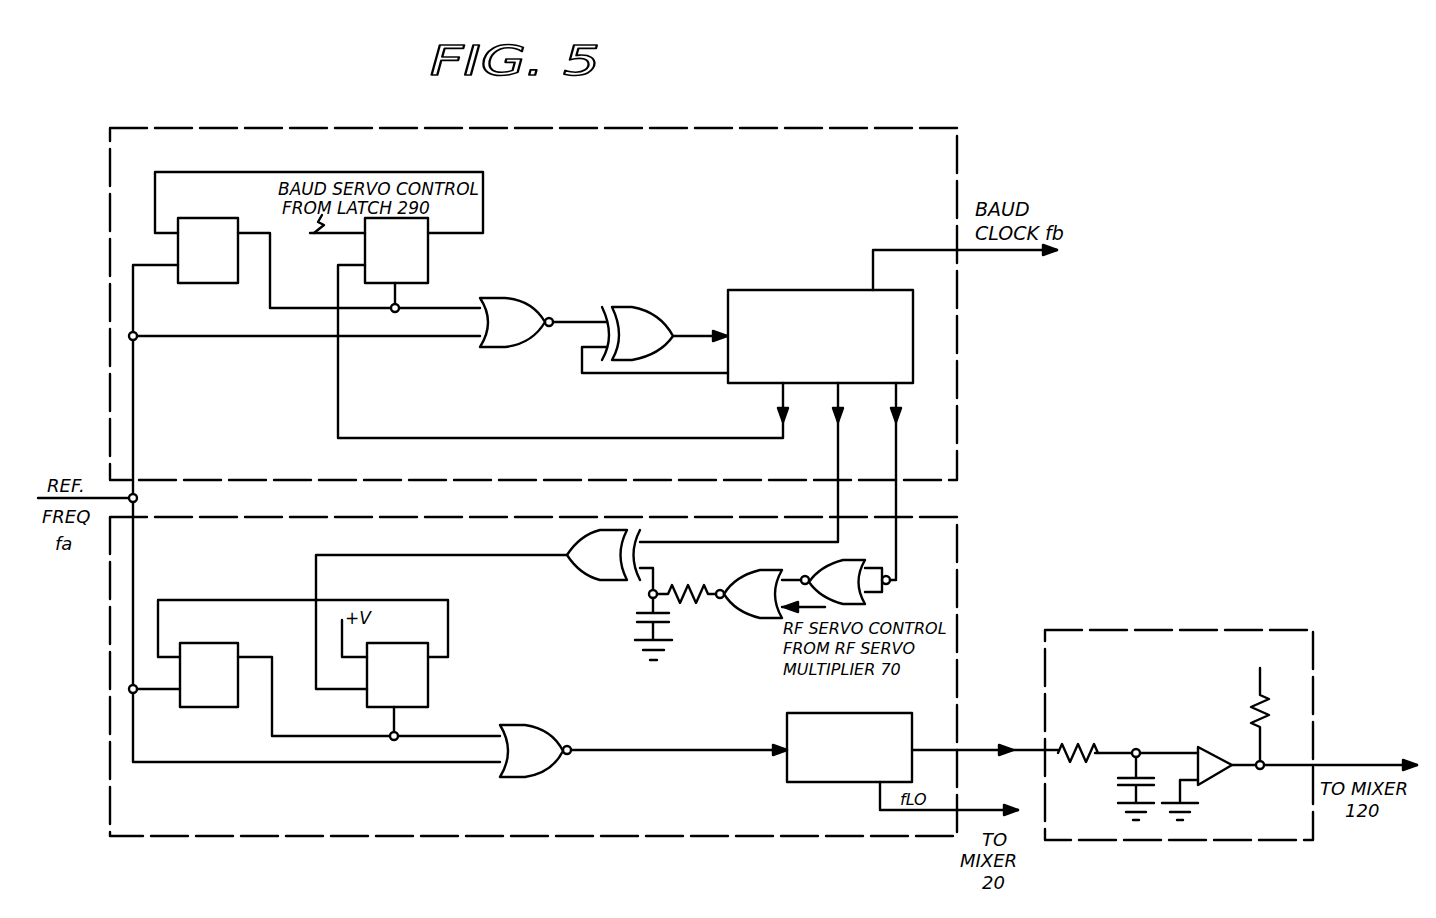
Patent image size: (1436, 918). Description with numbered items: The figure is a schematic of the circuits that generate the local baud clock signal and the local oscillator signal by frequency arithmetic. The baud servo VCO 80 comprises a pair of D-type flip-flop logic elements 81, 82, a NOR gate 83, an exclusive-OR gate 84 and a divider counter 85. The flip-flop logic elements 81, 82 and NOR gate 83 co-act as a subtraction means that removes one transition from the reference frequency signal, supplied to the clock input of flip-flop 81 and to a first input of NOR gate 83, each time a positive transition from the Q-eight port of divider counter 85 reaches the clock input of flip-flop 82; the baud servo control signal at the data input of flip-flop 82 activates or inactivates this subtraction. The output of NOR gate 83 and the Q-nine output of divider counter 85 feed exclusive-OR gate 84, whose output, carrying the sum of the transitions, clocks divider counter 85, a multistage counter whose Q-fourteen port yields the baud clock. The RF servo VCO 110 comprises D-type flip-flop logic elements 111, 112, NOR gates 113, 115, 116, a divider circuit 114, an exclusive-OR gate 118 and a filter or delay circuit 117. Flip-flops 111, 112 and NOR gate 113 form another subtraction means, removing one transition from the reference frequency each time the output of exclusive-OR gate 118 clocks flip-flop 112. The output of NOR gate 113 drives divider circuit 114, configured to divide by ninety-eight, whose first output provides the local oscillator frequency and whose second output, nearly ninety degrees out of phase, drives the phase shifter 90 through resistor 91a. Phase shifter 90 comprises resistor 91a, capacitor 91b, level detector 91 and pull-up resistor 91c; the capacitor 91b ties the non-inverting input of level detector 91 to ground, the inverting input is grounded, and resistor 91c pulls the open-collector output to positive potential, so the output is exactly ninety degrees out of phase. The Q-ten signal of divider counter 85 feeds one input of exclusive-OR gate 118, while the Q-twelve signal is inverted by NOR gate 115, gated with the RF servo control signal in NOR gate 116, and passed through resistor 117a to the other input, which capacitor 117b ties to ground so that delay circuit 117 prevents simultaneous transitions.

The baud servo VCO 80 is at (957, 145).
The D-type flip-flop logic element 81 is at (214, 213).
The D-type flip-flop logic element 82 is at (428, 270).
The NOR gate 83 is at (515, 298).
The exclusive-OR gate 84 is at (650, 307).
The divider counter 85 is at (786, 290).
The phase shifter 90 is at (1188, 630).
The level detector 91 is at (1210, 746).
The resistor 91a is at (1078, 742).
The capacitor 91b is at (1116, 783).
The pull-up resistor 91c is at (1262, 712).
The RF servo VCO 110 is at (957, 540).
The D-type flip-flop logic element 111 is at (220, 643).
The D-type flip-flop logic element 112 is at (400, 643).
The NOR gate 113 is at (522, 725).
The divider circuit 114 is at (848, 713).
The NOR gate 115 is at (835, 563).
The NOR gate 116 is at (758, 572).
The delay circuit 117 is at (636, 598).
The resistor 117a is at (684, 586).
The capacitor 117b is at (672, 618).
The exclusive-OR gate 118 is at (590, 546).